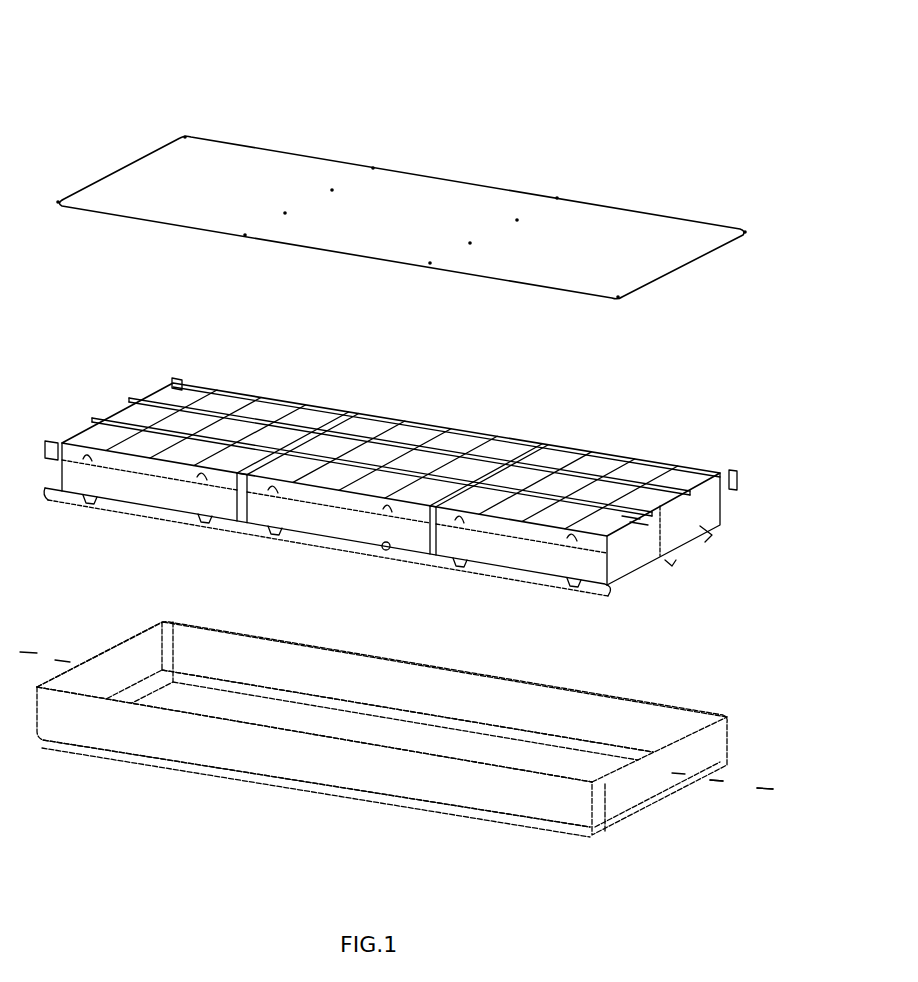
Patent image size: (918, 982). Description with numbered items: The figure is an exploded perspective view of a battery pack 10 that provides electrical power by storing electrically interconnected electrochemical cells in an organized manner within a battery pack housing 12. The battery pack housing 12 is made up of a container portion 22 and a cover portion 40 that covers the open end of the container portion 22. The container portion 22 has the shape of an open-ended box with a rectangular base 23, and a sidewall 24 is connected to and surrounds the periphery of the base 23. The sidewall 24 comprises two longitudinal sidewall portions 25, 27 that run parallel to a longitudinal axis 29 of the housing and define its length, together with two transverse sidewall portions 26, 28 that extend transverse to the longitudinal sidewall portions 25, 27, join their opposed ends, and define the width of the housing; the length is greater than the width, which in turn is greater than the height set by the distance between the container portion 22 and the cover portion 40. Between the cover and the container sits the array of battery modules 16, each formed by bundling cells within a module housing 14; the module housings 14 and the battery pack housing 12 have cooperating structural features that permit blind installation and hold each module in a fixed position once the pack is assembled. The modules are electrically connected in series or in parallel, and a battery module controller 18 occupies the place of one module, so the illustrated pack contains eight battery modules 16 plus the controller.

The battery pack 10 is at (230, 50).
The battery pack housing 12 is at (770, 324).
The module housing 14 is at (258, 395).
The battery module 16 is at (142, 408).
The battery module controller (BMS) 18 is at (530, 552).
The container portion 22 is at (698, 712).
The base 23 is at (398, 730).
The sidewall 24 is at (340, 767).
The longitudinal sidewall portion 25 is at (316, 788).
The transverse sidewall portion 26 is at (640, 792).
The longitudinal sidewall portion 27 is at (575, 708).
The transverse sidewall portion 28 is at (113, 662).
The longitudinal axis 29 is at (735, 783).
The cover portion 40 is at (653, 263).